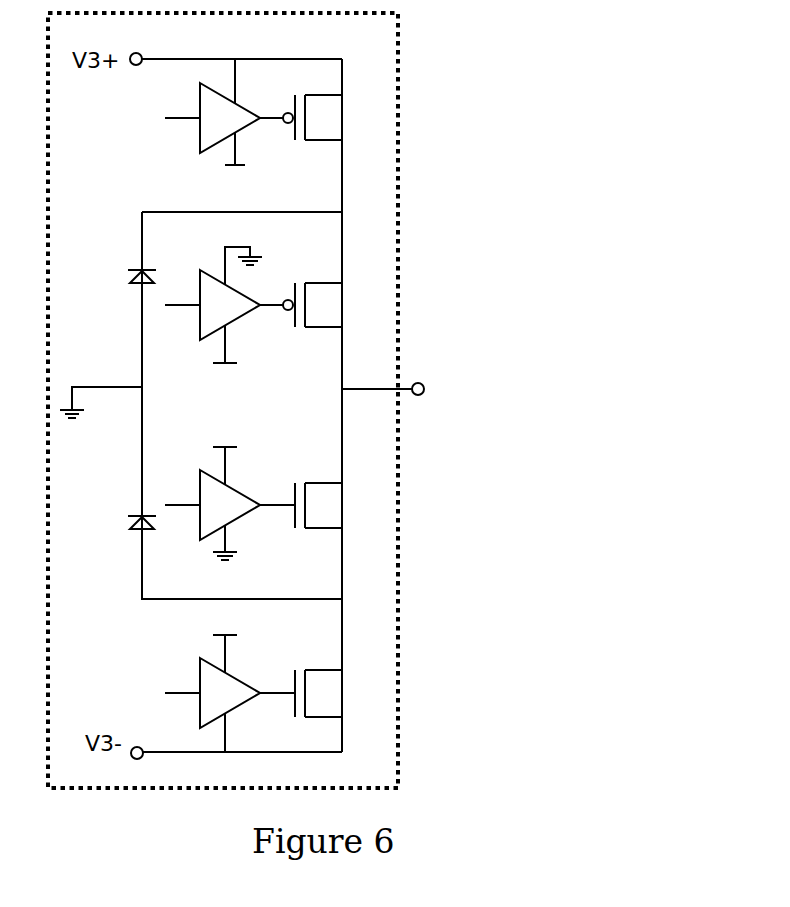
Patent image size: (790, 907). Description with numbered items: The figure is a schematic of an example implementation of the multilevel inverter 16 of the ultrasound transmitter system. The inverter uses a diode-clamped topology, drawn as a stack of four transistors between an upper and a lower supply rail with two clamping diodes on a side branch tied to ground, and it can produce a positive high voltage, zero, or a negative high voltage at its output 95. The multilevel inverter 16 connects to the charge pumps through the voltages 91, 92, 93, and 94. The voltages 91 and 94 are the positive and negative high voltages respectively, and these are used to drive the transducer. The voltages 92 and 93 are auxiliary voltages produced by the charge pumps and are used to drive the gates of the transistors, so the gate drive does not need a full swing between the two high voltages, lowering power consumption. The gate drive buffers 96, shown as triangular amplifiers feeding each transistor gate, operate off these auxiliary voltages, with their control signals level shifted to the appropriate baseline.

The multilevel inverter 16 is at (400, 80).
The voltage HV+ 91 is at (272, 57).
The auxiliary voltage 92 is at (247, 155).
The auxiliary voltage 93 is at (247, 373).
The voltage HV− 94 is at (348, 750).
The output 95 is at (421, 402).
The gate drive buffers 96 is at (254, 690).